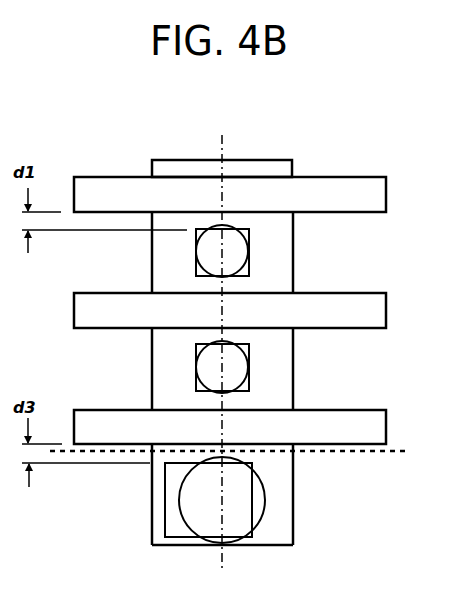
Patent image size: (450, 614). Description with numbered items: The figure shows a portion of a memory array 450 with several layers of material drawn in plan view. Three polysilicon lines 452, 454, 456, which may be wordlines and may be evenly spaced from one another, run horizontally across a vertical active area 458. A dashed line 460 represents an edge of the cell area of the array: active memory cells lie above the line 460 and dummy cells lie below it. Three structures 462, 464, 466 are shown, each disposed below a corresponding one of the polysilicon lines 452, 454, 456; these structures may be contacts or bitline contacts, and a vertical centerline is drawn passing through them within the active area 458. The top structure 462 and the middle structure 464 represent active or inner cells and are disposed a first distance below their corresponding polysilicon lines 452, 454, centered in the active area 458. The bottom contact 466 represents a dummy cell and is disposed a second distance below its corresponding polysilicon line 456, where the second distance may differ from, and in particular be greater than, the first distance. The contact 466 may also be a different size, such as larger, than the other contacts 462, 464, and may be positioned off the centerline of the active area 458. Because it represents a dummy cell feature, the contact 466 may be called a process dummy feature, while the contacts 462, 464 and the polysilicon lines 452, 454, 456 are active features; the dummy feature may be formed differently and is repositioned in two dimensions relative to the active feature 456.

The memory array 450 is at (123, 86).
The polysilicon line 452 is at (107, 177).
The polysilicon line 454 is at (107, 293).
The polysilicon line 456 is at (107, 410).
The active area 458 is at (207, 160).
The dashed line 460 is at (353, 453).
The contact structure 462 is at (250, 264).
The contact structure 464 is at (250, 381).
The contact structure 466 is at (252, 497).